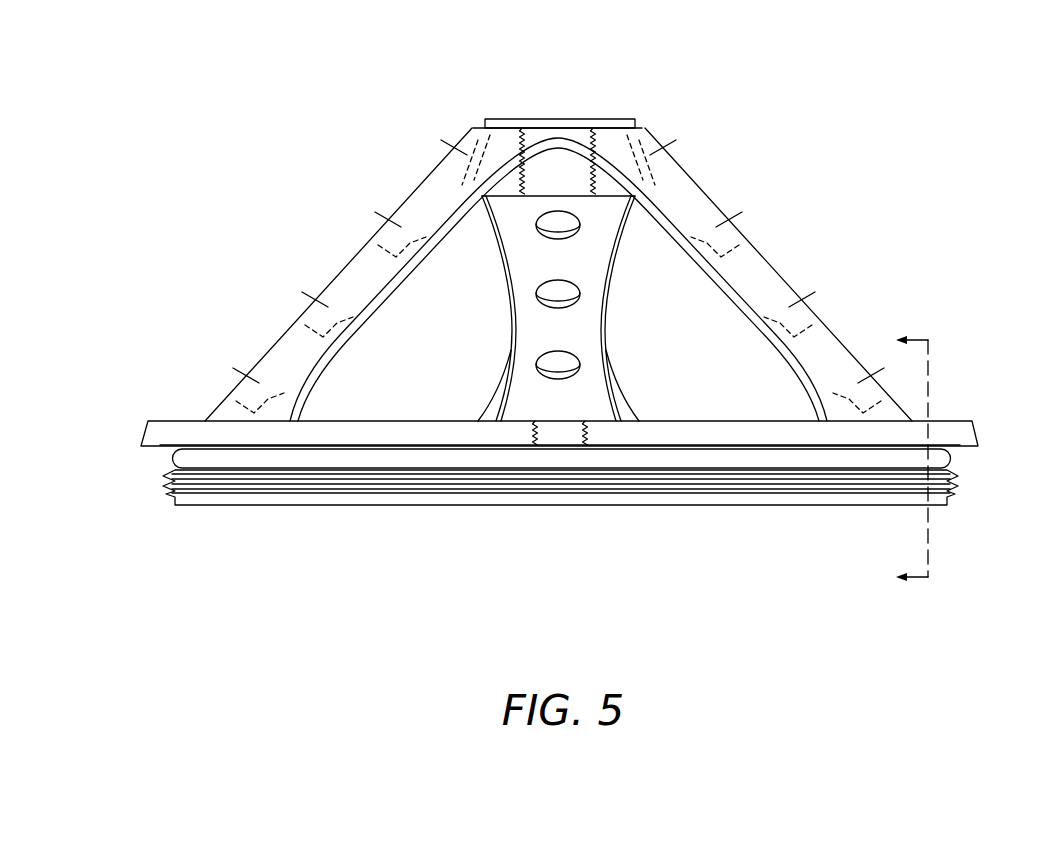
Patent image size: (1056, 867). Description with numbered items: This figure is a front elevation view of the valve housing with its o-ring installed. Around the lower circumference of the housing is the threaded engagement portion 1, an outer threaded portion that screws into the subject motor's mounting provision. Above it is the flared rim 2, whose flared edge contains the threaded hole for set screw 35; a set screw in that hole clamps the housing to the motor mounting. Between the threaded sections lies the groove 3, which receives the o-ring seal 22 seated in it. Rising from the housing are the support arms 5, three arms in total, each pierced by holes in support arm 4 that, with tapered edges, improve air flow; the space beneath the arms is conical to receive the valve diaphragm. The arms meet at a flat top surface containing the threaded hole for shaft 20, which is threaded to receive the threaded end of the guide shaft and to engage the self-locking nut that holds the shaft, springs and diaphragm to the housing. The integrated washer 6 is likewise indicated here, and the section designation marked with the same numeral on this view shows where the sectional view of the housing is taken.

The threaded engagement portion 1 is at (960, 492).
The flared rim 2 is at (984, 427).
The groove 3 is at (761, 438).
The holes in support arm 4 is at (555, 372).
The support arm 5 is at (280, 330).
The integrated washer 6 is at (642, 116).
The threaded hole for shaft 20 is at (570, 126).
The o-ring seal 22 is at (166, 459).
The threaded hole for set screw 35 is at (591, 456).